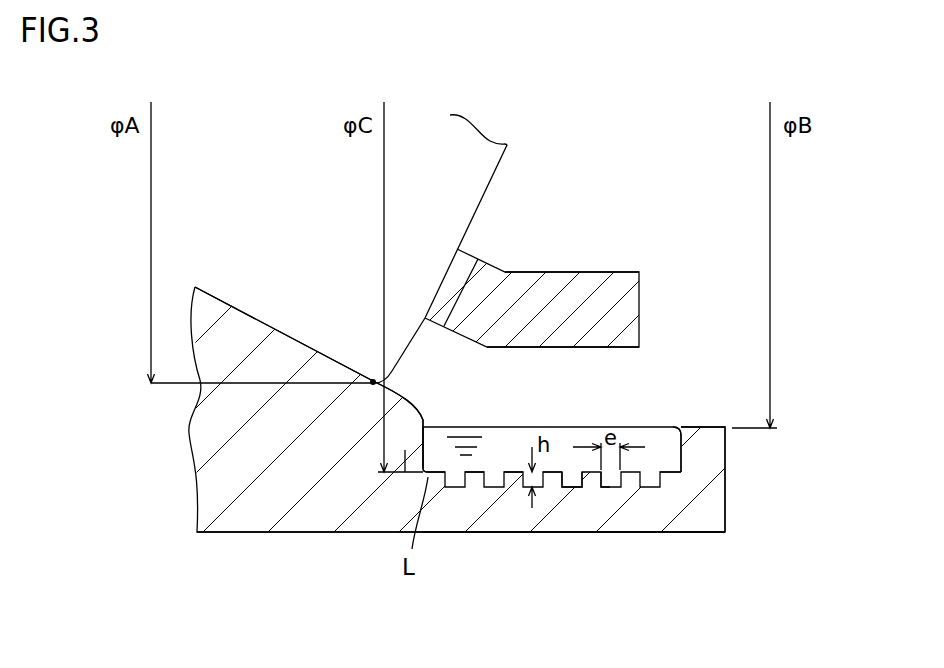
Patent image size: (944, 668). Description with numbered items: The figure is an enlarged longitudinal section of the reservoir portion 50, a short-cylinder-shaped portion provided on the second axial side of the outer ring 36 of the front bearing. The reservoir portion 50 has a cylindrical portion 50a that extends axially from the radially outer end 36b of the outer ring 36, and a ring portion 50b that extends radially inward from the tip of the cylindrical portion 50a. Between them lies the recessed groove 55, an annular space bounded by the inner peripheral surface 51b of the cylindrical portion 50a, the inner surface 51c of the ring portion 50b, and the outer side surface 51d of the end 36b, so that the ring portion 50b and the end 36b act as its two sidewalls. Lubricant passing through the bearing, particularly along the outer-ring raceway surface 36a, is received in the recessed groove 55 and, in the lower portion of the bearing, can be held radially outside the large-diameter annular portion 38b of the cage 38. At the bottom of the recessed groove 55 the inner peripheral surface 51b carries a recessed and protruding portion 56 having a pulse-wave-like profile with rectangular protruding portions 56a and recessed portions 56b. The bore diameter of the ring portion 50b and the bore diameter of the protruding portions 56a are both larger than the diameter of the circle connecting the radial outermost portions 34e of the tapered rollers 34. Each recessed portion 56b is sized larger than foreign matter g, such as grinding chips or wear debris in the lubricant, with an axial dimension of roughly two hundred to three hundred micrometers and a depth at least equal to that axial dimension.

The tapered rollers 34 is at (455, 185).
The radial outermost portions of the tapered rollers 34e is at (371, 380).
The outer ring 36 is at (242, 541).
The outer-ring raceway surface 36a is at (293, 339).
The radially outer end of the outer ring 36b is at (405, 475).
The cage 38 is at (644, 278).
The large-diameter annular portion of the cage 38b is at (603, 303).
The reservoir portion 50 is at (477, 540).
The cylindrical portion 50a is at (508, 533).
The ring portion 50b is at (707, 450).
The inner peripheral surface of the cylindrical portion 51b is at (512, 470).
The inner surface of the ring portion 51c is at (673, 430).
The outer side surface of the end of the outer ring 51d is at (426, 442).
The recessed groove 55 is at (647, 450).
The recessed and protruding portion 56 is at (607, 392).
The protruding portions 56a is at (555, 471).
The recessed portions 56b is at (569, 471).
The foreign matter g is at (601, 487).